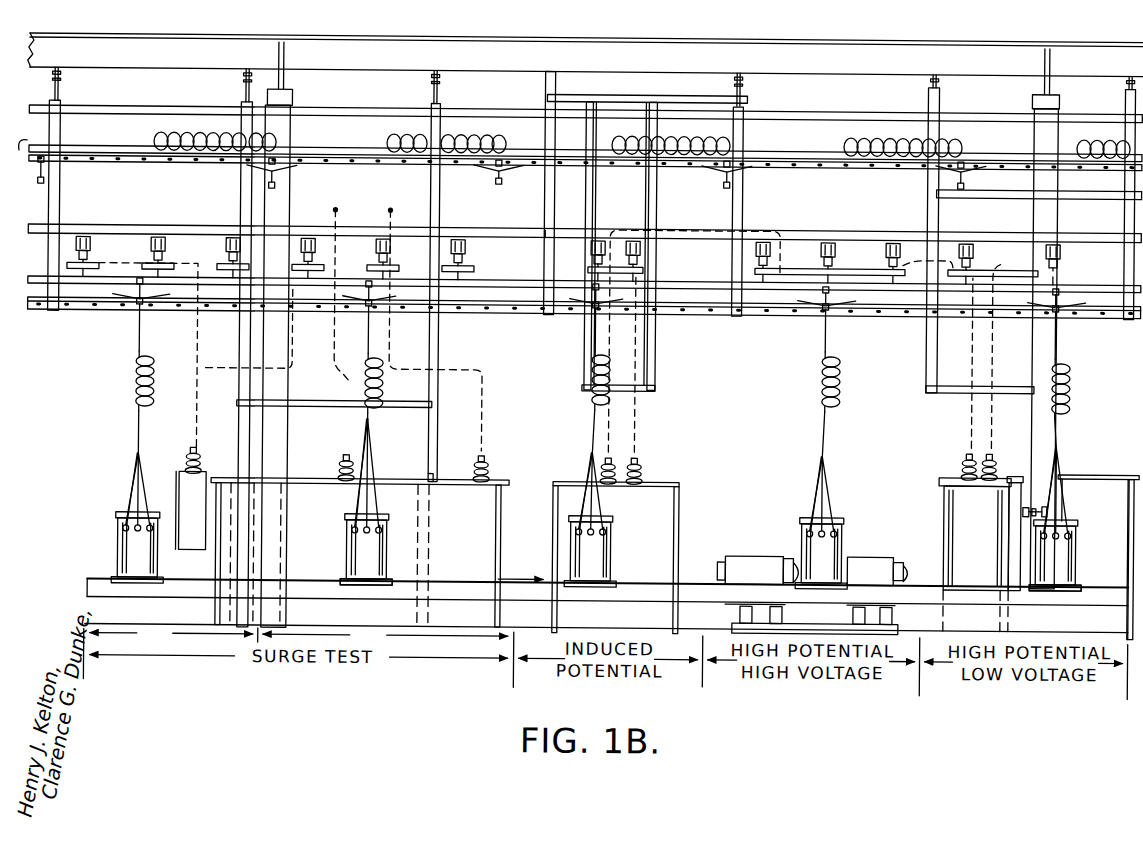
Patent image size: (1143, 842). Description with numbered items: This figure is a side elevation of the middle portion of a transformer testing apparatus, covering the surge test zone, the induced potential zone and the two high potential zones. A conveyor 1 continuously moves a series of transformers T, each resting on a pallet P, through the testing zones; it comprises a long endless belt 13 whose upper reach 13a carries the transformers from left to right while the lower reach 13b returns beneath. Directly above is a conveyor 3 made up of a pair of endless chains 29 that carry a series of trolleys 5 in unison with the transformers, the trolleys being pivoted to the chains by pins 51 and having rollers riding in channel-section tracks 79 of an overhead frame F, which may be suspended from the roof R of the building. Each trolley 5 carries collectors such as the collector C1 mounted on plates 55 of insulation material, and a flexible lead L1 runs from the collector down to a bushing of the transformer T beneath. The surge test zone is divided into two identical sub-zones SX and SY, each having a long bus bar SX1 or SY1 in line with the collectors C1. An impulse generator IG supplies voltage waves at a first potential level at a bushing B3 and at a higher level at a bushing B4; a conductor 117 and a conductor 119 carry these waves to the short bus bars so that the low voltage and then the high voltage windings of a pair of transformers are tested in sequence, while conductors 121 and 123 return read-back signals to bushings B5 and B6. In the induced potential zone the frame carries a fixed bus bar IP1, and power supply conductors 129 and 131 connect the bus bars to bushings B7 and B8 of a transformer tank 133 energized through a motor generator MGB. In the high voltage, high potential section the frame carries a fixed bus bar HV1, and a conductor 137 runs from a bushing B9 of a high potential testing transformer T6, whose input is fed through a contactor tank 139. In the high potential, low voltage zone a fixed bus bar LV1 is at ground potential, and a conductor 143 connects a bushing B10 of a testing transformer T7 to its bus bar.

The roof R is at (410, 66).
The overhead frame F is at (63, 193).
The conveyor 3 is at (160, 163).
The channel-section tracks 79 is at (140, 155).
The endless chains 29 is at (374, 161).
The long bus bar SX1 is at (70, 273).
The long bus bar SY1 is at (360, 274).
The fixed bus bar IP1 is at (650, 272).
The fixed bus bar HV1 is at (862, 296).
The fixed bus bar LV1 is at (1028, 290).
The flexible lead L1 is at (226, 134).
The trolley 5 is at (28, 166).
The collector C1 is at (39, 182).
The plates of insulation material 55 is at (488, 165).
The pins 51 is at (505, 172).
The conductor 121 is at (199, 352).
The conductor 123 is at (226, 366).
The conductor 117 is at (350, 378).
The conductor 119 is at (487, 392).
The power supply conductor 129 is at (618, 396).
The power supply conductor 131 is at (643, 396).
The conductor 137 is at (972, 418).
The conductor 143 is at (1006, 402).
The impulse generator IG is at (310, 474).
The transformer tank 133 is at (680, 498).
The contactor tank 139 is at (1100, 470).
The bushing B3 is at (345, 460).
The bushing B4 is at (492, 462).
The bushing B5 is at (192, 447).
The bushing B6 is at (190, 458).
The bushing B7 is at (612, 457).
The bushing B8 is at (644, 460).
The bushing B9 is at (965, 458).
The bushing B10 is at (999, 452).
The transformer T is at (148, 557).
The pallet P is at (390, 579).
The high potential testing transformer T6 is at (962, 495).
The testing transformer T7 is at (1021, 482).
The motor generator MGB is at (862, 556).
The endless belt 13 is at (928, 570).
The upper reach 13a is at (320, 578).
The lower reach 13b is at (334, 598).
The conveyor 1 is at (155, 597).
The surge test sub-zone SX is at (170, 651).
The surge test sub-zone SY is at (388, 656).